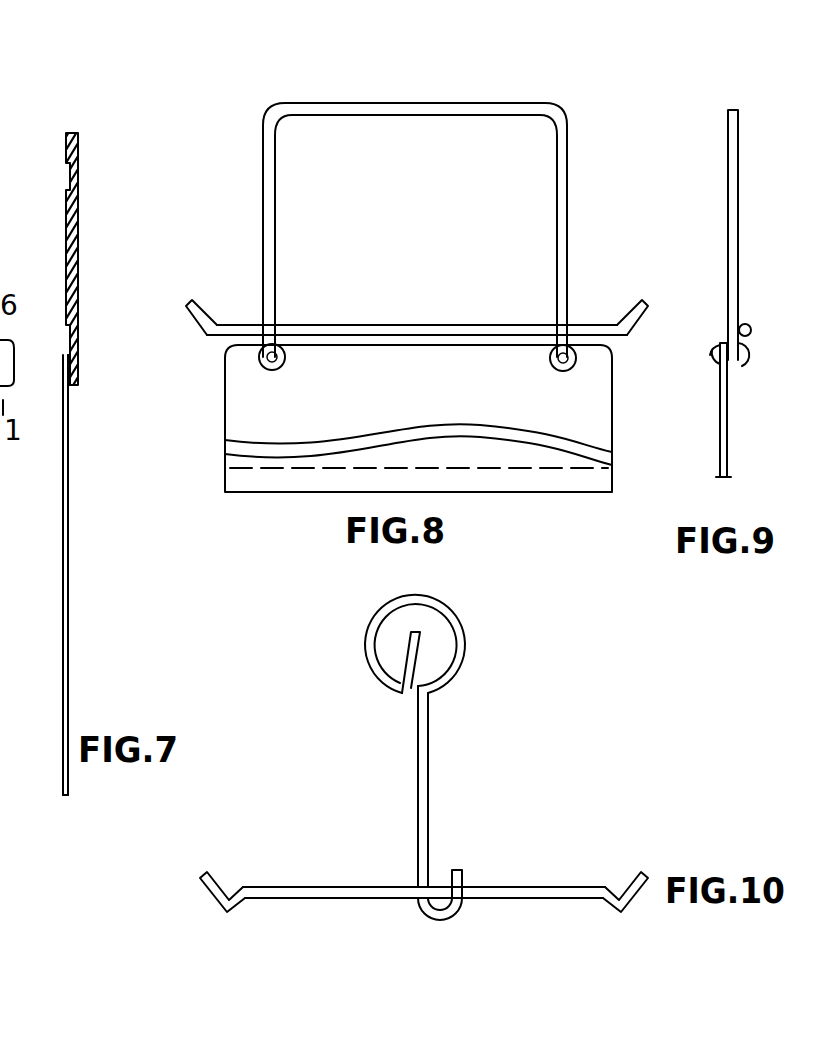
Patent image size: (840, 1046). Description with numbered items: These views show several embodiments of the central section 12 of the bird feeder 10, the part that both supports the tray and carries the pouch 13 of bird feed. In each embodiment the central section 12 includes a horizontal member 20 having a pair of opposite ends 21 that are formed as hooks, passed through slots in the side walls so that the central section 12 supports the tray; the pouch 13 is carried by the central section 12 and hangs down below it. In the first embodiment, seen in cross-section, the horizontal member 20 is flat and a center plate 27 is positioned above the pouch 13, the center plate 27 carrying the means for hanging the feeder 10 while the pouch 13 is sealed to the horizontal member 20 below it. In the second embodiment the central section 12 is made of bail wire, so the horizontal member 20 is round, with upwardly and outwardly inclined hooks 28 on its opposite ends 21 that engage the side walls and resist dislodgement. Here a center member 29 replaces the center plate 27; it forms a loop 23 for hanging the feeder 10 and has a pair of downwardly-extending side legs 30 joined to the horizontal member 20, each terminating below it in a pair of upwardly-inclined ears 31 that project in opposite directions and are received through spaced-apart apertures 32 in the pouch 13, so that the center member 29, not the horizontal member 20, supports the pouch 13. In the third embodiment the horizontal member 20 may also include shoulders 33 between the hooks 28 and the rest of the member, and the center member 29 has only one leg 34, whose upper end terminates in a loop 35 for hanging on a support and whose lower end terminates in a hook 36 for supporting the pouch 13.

In FIG. 8, the feeder 10 is at (423, 317).
In FIG. 7, the central section 12 is at (117, 259).
In FIG. 8, the central section 12 is at (423, 238).
In FIG. 9, the central section 12 is at (749, 239).
In FIG. 10, the central section 12 is at (428, 765).
In FIG. 7, the pouch 13 is at (66, 545).
In FIG. 8, the pouch 13 is at (435, 418).
In FIG. 9, the pouch 13 is at (730, 435).
In FIG. 7, the horizontal member 20 is at (78, 358).
In FIG. 8, the horizontal member 20 is at (423, 308).
In FIG. 9, the horizontal member 20 is at (752, 326).
In FIG. 10, the horizontal member 20 is at (428, 847).
In FIG. 8, the opposite ends 21 is at (187, 306).
In FIG. 10, the opposite ends 21 is at (207, 872).
In FIG. 10, the loop 23 is at (383, 608).
In FIG. 7, the center plate 27 is at (80, 238).
In FIG. 8, the hooks 28 is at (190, 322).
In FIG. 10, the hooks 28 is at (228, 878).
In FIG. 8, the center member 29 is at (415, 214).
In FIG. 9, the center member 29 is at (775, 214).
In FIG. 10, the center member 29 is at (434, 740).
In FIG. 8, the side legs 30 is at (264, 185).
In FIG. 9, the side legs 30 is at (740, 240).
In FIG. 8, the ears 31 is at (258, 353).
In FIG. 9, the ears 31 is at (755, 348).
In FIG. 8, the apertures 32 is at (278, 370).
In FIG. 10, the shoulders 33 is at (428, 862).
In FIG. 10, the leg 34 is at (428, 752).
In FIG. 10, the loop 35 is at (445, 608).
In FIG. 10, the hook 36 is at (462, 905).